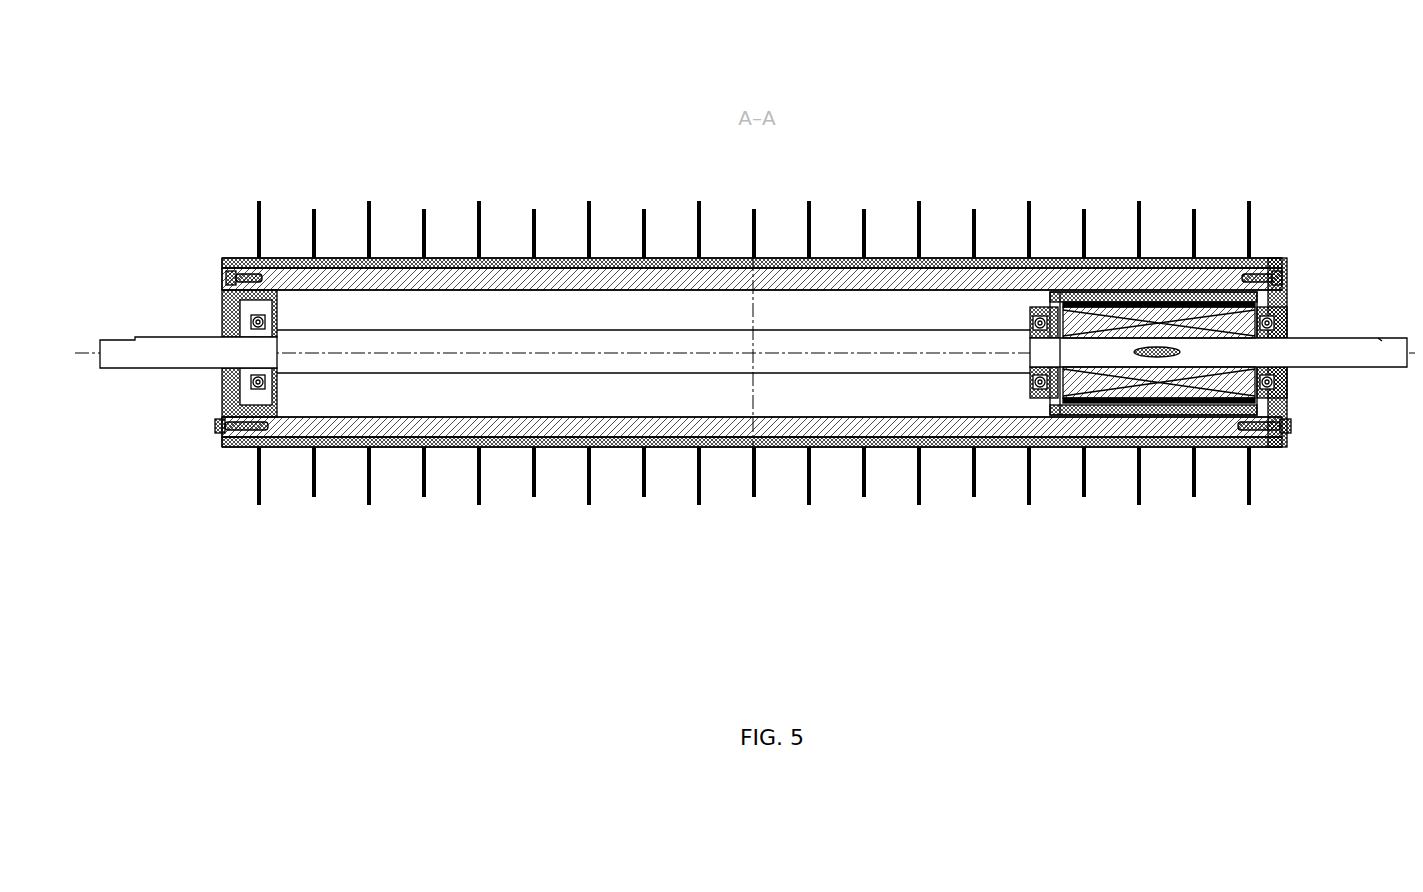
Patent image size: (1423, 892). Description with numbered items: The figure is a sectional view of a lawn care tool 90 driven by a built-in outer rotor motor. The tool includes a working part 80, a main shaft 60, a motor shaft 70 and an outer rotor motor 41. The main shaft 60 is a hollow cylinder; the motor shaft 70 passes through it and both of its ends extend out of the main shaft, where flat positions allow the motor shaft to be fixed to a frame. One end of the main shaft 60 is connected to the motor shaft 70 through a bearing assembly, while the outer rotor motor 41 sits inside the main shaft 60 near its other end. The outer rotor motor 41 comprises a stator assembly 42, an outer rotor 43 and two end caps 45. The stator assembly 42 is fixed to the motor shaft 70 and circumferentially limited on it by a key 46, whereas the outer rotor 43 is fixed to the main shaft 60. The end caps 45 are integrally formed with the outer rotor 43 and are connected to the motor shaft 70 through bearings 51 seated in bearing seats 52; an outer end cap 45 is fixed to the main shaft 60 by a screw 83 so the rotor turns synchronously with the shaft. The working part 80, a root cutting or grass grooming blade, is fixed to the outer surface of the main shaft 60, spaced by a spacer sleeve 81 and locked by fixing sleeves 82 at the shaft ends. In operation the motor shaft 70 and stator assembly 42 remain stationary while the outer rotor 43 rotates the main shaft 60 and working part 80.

The lawn care tool 90 is at (157, 50).
The working part 80 is at (372, 228).
The spacer sleeve 81 is at (490, 258).
The screw 83 is at (240, 272).
The fixing sleeve 82 is at (1285, 437).
The main shaft 60 is at (605, 280).
The motor shaft 70 is at (140, 360).
The bearing 51 is at (252, 320).
The bearing seat 52 is at (230, 400).
The end cap 45 is at (1050, 302).
The stator assembly 42 is at (1212, 318).
The outer rotor 43 is at (1140, 300).
The outer rotor motor 41 is at (1138, 372).
The key 46 is at (1163, 356).